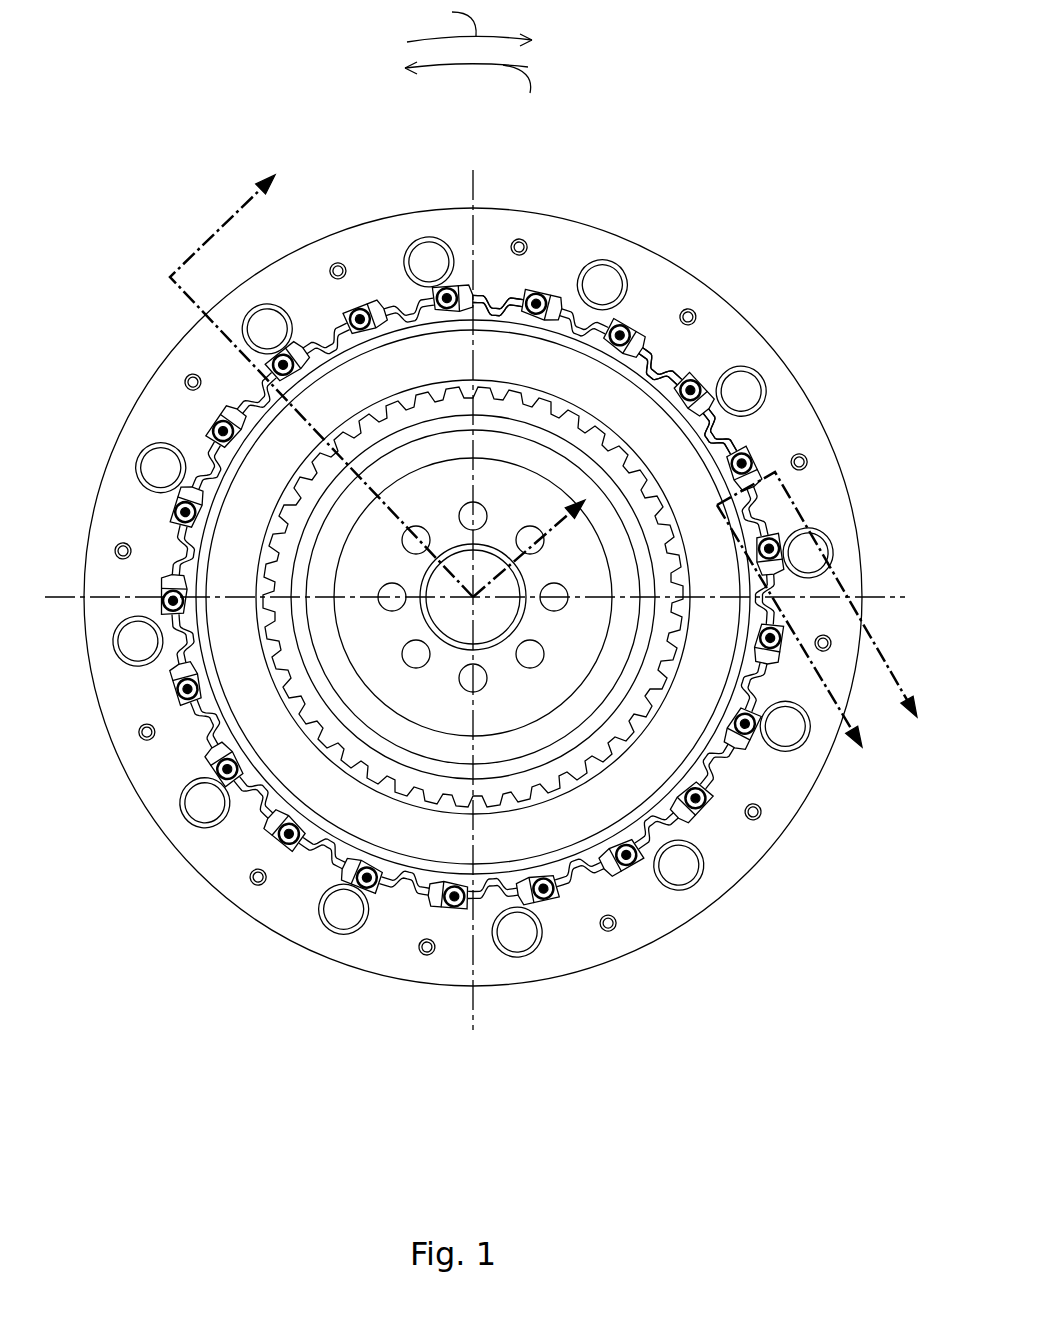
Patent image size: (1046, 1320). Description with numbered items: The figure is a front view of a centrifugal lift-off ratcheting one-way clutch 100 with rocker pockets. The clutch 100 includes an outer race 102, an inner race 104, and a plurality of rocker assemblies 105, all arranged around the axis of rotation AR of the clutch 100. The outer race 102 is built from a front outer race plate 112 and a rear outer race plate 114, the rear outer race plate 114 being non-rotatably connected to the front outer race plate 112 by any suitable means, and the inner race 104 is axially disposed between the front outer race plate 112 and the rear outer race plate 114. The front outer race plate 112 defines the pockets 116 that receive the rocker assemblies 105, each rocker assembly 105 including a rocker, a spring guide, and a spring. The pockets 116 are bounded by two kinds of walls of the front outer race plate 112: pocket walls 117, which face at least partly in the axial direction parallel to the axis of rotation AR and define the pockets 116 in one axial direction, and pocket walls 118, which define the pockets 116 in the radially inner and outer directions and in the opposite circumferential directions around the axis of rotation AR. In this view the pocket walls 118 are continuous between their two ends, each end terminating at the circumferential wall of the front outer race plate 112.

The centrifugal lift-off ratcheting one-way clutch 100 is at (723, 123).
The outer race 102 is at (633, 225).
The inner race 104 is at (507, 348).
The rocker assemblies 105 is at (490, 290).
The front outer race plate 112 is at (155, 365).
The rear outer race plate 114 is at (455, 245).
The pockets 116 is at (670, 365).
The pocket walls 117 is at (660, 370).
The pocket walls 118 is at (727, 443).
The axis of rotation AR is at (482, 602).